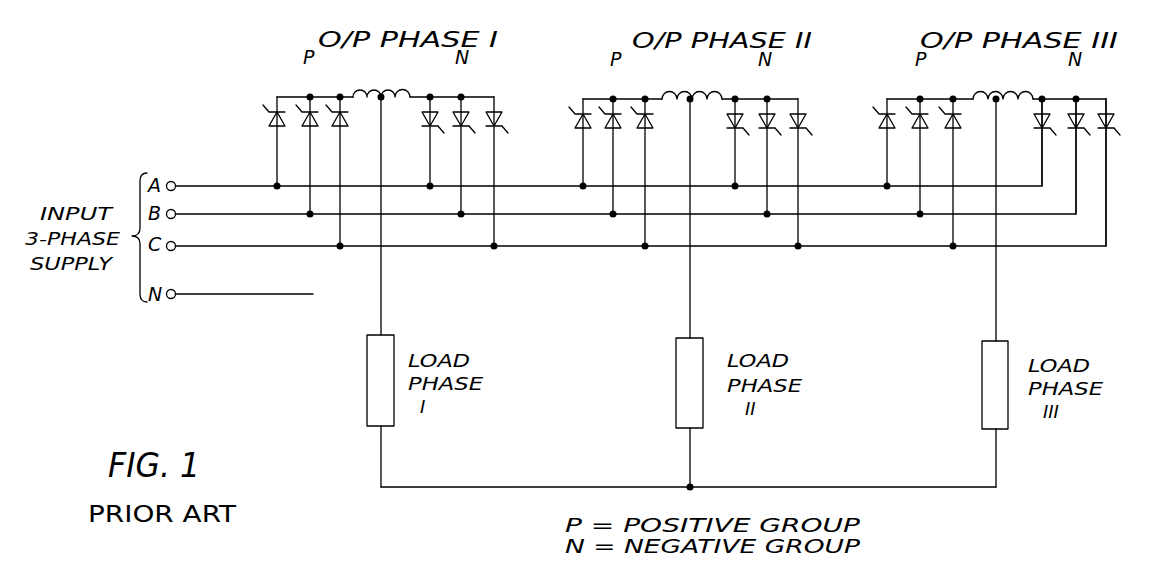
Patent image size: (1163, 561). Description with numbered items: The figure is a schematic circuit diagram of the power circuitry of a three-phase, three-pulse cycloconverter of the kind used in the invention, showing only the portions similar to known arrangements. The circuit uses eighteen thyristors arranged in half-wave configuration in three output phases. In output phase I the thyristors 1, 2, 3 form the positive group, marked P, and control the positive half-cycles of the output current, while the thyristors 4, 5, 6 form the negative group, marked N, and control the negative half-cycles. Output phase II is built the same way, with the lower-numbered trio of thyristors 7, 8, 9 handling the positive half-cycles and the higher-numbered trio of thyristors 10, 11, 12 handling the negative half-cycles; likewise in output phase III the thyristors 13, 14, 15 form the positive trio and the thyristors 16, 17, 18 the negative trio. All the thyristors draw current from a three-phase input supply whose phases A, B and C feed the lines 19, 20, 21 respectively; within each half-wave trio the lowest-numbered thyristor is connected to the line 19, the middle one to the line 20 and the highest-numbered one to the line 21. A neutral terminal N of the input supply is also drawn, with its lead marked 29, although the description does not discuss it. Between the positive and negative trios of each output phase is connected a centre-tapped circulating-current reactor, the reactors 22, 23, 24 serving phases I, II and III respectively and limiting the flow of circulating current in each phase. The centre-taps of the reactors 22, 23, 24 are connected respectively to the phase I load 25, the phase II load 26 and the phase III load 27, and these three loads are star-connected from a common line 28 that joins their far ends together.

The thyristor 1 is at (265, 124).
The thyristor 2 is at (303, 121).
The thyristor 3 is at (344, 125).
The thyristor 4 is at (425, 125).
The thyristor 5 is at (455, 128).
The thyristor 6 is at (488, 128).
The thyristor 7 is at (577, 129).
The thyristor 8 is at (608, 130).
The thyristor 9 is at (641, 129).
The thyristor 10 is at (730, 129).
The thyristor 11 is at (762, 130).
The thyristor 12 is at (804, 130).
The thyristor 13 is at (882, 129).
The thyristor 14 is at (915, 129).
The thyristor 15 is at (948, 129).
The thyristor 16 is at (1037, 129).
The thyristor 17 is at (1069, 129).
The thyristor 18 is at (1110, 130).
The line 19 is at (218, 186).
The line 20 is at (235, 213).
The line 21 is at (225, 247).
The centre-tapped circulating-current reactor 22 is at (375, 95).
The centre-tapped circulating-current reactor 23 is at (683, 97).
The centre-tapped circulating-current reactor 24 is at (995, 97).
The phase I load 25 is at (394, 337).
The phase II load 26 is at (703, 340).
The phase III load 27 is at (1008, 343).
The common line 28 is at (797, 487).
The input supply neutral line N 29 is at (205, 295).